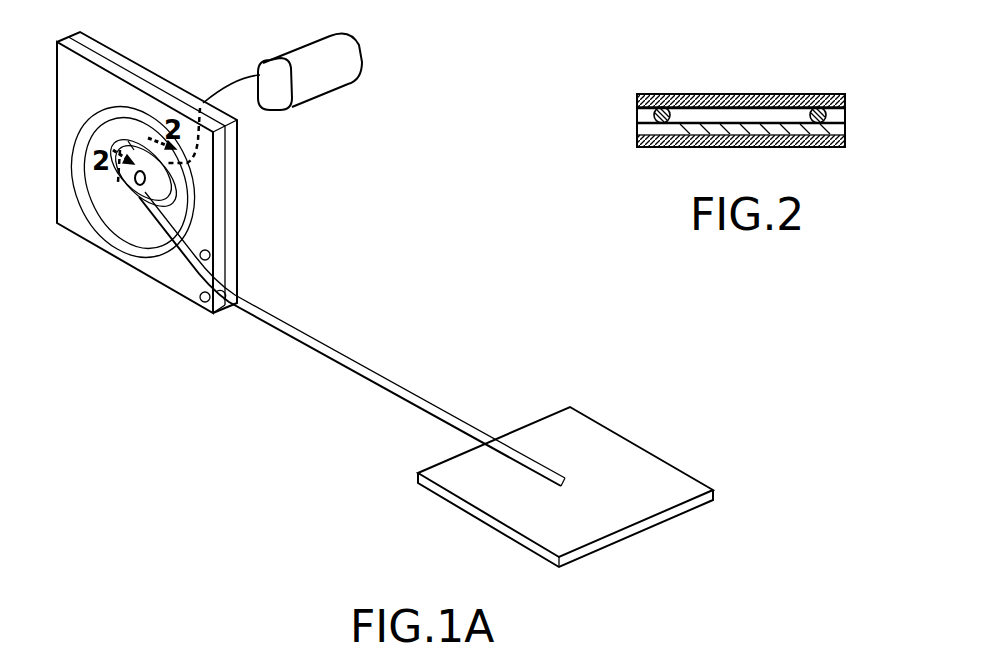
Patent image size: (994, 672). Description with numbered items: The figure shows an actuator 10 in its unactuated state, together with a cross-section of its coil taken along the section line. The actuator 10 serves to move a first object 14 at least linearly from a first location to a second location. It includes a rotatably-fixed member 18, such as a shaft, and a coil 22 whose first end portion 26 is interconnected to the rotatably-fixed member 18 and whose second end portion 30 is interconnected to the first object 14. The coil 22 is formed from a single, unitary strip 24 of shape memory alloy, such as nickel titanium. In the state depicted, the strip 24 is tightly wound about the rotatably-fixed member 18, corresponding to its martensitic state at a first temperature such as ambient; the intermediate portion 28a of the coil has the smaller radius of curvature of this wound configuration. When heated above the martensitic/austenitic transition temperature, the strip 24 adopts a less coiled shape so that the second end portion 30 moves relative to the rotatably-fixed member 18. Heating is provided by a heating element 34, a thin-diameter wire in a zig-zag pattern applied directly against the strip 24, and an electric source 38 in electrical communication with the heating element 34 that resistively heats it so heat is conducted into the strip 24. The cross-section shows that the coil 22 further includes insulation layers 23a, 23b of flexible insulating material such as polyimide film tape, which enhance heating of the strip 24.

In FIG. 1A, the actuator 10 is at (97, 262).
In FIG. 1A, the first object 14 is at (662, 458).
In FIG. 1A, the rotatably-fixed member 18 is at (140, 192).
In FIG. 1A, the coil 22 is at (178, 193).
In FIG. 2, the coil 22 is at (600, 113).
In FIG. 2, the insulation layer 23a is at (776, 93).
In FIG. 2, the insulation layer 23b is at (810, 140).
In FIG. 1A, the strip 24 is at (108, 202).
In FIG. 2, the strip 24 is at (832, 126).
In FIG. 1A, the first end portion 26 is at (133, 180).
In FIG. 1A, the intermediate portion 28a is at (126, 138).
In FIG. 1A, the second end portion 30 is at (500, 415).
In FIG. 2, the heating element 34 is at (818, 106).
In FIG. 1A, the electric source 38 is at (318, 100).